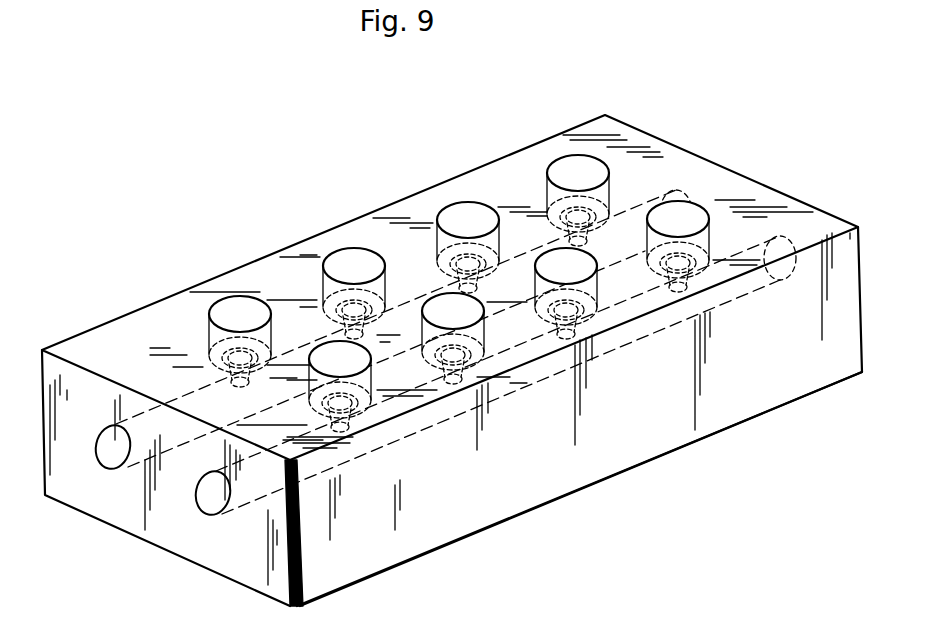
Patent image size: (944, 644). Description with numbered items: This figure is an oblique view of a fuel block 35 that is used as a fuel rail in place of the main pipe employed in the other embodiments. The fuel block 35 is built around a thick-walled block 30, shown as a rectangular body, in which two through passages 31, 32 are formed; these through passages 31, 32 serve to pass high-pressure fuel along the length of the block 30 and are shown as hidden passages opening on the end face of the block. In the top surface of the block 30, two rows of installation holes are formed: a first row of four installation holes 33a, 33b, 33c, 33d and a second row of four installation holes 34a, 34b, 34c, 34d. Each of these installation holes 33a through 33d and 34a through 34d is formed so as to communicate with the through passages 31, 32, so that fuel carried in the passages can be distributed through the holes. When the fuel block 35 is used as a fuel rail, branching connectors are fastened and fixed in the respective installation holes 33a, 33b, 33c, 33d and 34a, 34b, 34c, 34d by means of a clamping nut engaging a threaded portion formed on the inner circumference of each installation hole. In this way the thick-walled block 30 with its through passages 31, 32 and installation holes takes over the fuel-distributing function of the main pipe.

The thick-walled block 30 is at (276, 265).
The through passage 31 is at (115, 458).
The through passage 32 is at (207, 490).
The installation hole 33a is at (222, 300).
The installation hole 33b is at (341, 254).
The installation hole 33c is at (448, 212).
The installation hole 33d is at (556, 170).
The installation hole 34a is at (366, 361).
The installation hole 34b is at (466, 308).
The installation hole 34c is at (582, 260).
The installation hole 34d is at (700, 222).
The fuel block 35 is at (500, 535).